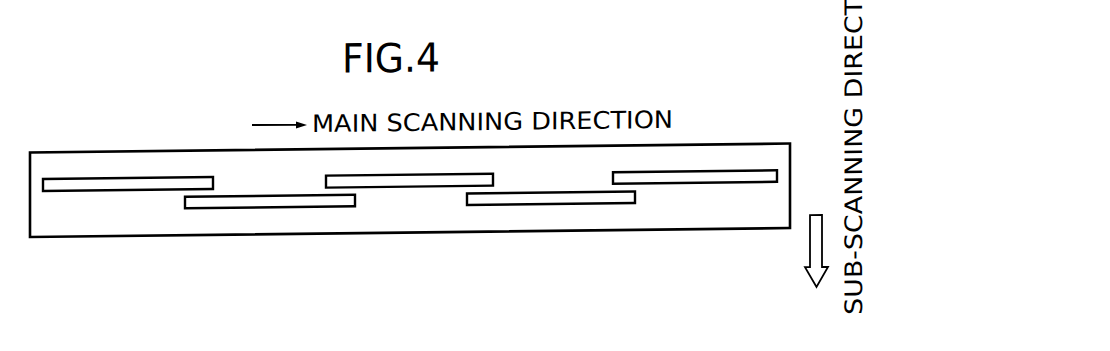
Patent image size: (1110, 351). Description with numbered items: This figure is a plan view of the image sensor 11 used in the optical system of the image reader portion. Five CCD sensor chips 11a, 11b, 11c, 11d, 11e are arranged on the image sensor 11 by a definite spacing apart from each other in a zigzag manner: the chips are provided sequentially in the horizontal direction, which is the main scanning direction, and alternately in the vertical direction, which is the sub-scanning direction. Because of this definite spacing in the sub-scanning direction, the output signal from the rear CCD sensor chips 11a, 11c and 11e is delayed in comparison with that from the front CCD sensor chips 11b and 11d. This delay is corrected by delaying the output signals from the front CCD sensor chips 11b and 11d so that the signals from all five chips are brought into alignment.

The image sensor 11 is at (758, 151).
The CCD sensor chip 11a is at (87, 193).
The CCD sensor chip 11b is at (220, 211).
The CCD sensor chip 11c is at (430, 192).
The CCD sensor chip 11d is at (595, 211).
The CCD sensor chip 11e is at (725, 192).